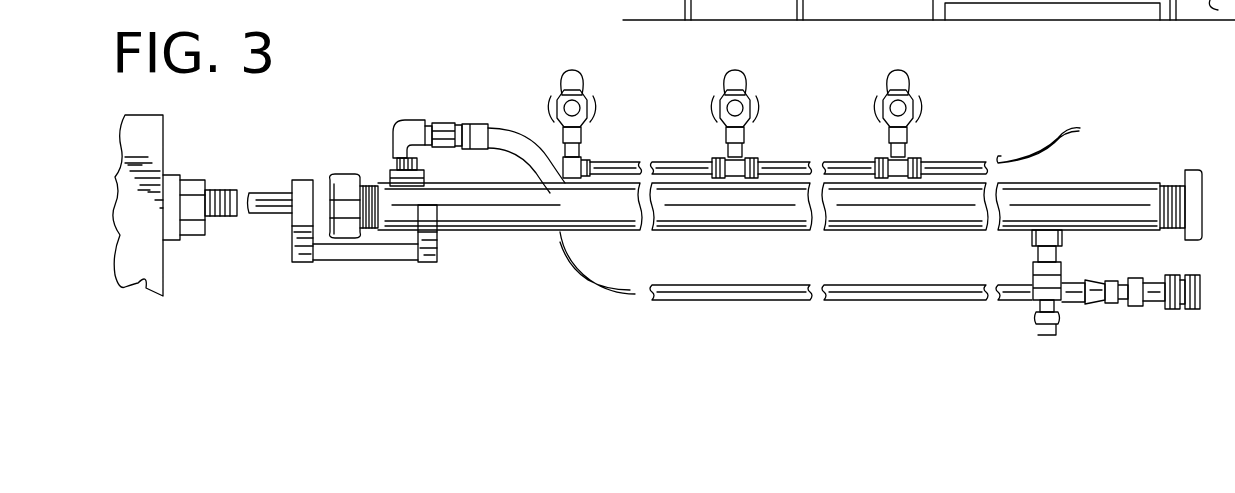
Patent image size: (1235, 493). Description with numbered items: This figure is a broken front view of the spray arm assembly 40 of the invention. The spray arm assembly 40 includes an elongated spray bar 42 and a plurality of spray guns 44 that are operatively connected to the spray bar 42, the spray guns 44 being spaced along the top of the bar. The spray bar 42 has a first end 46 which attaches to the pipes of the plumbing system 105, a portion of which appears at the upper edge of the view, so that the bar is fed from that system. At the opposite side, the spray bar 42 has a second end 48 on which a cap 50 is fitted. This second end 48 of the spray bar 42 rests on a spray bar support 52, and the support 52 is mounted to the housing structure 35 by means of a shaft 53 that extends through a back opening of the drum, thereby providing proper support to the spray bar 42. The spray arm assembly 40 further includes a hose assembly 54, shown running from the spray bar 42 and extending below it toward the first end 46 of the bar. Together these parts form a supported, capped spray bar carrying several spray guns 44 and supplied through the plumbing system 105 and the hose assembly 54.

The housing structure 35 is at (150, 142).
The spray arm assembly 40 is at (537, 233).
The spray bar 42 is at (1120, 192).
The spray guns 44 is at (585, 95).
The first end 46 is at (1172, 186).
The second end 48 is at (366, 190).
The cap 50 is at (344, 181).
The spray bar support 52 is at (388, 248).
The shaft 53 is at (263, 206).
The hose assembly 54 is at (768, 305).
The plumbing system 105 is at (1194, 0).